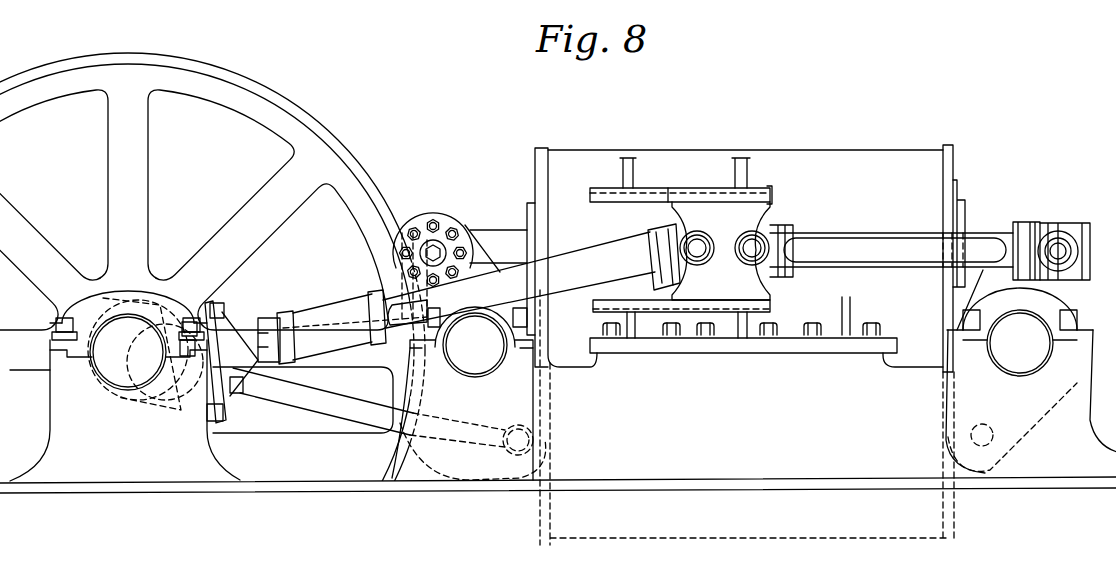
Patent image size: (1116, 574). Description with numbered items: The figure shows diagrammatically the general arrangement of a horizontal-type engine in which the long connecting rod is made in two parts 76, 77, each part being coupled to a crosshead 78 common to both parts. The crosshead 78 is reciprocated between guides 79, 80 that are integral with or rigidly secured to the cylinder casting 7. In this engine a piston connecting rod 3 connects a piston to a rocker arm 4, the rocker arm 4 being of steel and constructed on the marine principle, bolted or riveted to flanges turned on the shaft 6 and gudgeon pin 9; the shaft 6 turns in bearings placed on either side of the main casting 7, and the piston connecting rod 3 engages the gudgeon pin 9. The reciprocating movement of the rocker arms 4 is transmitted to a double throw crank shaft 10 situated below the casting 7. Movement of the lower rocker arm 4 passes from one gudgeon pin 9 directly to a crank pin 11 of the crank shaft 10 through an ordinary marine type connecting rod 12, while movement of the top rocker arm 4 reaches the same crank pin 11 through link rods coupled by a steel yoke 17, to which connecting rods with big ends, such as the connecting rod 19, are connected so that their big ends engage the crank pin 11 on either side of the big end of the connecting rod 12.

The connecting rod 3 is at (498, 246).
The rocker arm 4 is at (462, 222).
The shaft 6 is at (475, 355).
The main casting 7 is at (755, 258).
The gudgeon pin 9 is at (533, 440).
The crank shaft 10 is at (102, 365).
The crank pin 11 is at (130, 365).
The connecting rod 12 is at (367, 407).
The yoke 17 is at (342, 327).
The connecting rod 19 is at (247, 337).
The connecting rod part 76 is at (572, 268).
The connecting rod part 77 is at (845, 247).
The crosshead 78 is at (721, 251).
The guide 79 is at (637, 190).
The guide 80 is at (651, 312).